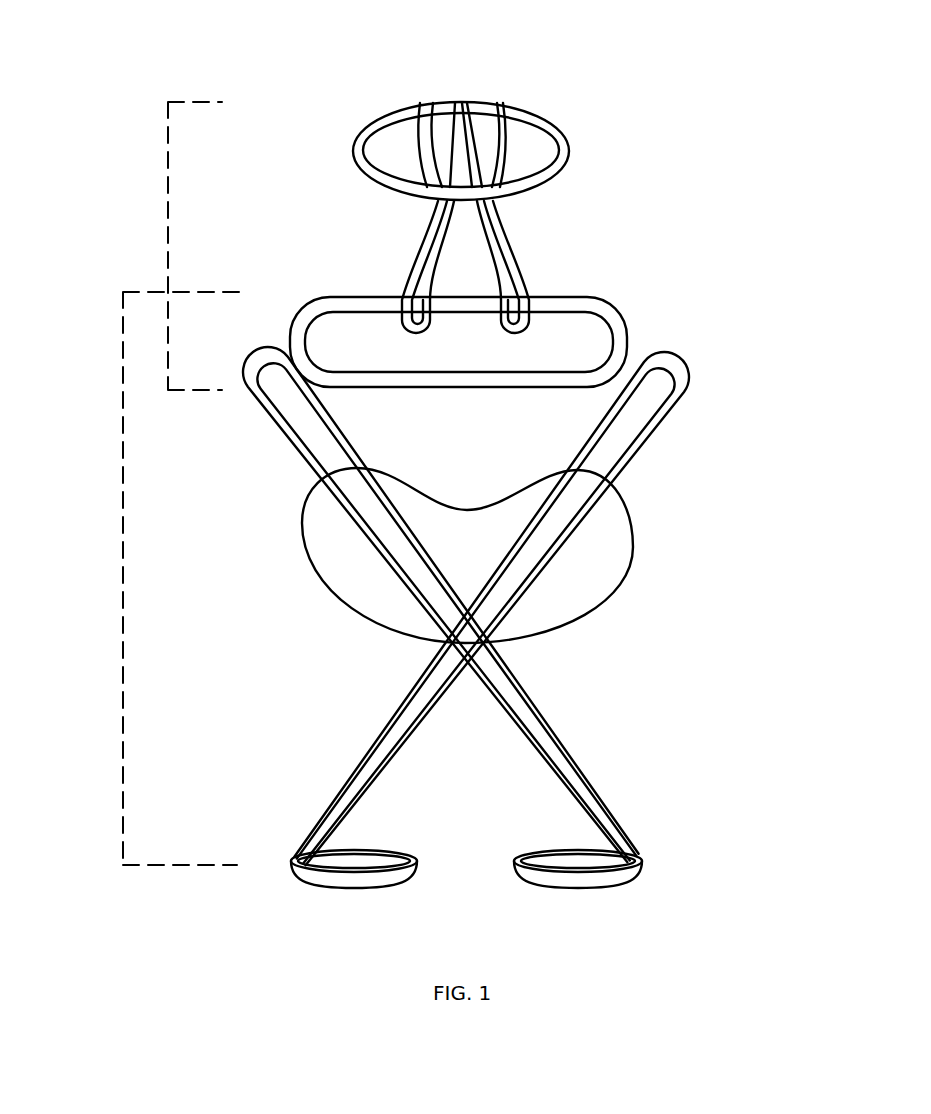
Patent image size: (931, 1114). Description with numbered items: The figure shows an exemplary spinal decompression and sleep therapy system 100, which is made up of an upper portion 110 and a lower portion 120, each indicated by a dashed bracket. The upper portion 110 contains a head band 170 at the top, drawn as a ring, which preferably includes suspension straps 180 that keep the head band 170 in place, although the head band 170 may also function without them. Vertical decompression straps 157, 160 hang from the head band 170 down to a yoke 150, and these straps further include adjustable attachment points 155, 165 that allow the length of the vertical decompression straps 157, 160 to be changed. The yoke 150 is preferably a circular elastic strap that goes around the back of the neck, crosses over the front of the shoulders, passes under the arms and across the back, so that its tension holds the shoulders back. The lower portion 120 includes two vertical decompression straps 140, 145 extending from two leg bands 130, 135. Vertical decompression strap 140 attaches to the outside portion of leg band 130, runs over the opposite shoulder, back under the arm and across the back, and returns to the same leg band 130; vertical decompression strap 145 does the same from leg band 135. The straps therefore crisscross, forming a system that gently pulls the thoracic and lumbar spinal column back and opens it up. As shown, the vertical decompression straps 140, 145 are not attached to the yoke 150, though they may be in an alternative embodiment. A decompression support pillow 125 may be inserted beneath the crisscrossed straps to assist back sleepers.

The spinal decompression and sleep therapy system 100 is at (697, 202).
The upper portion 110 is at (163, 238).
The lower portion 120 is at (122, 558).
The decompression support pillow 125 is at (634, 530).
The leg band 130 is at (310, 882).
The leg band 135 is at (640, 873).
The vertical decompression strap 140 is at (395, 720).
The vertical decompression strap 145 is at (550, 728).
The yoke 150 is at (623, 352).
The adjustable attachment point 155 is at (442, 203).
The vertical decompression strap 157 is at (446, 118).
The vertical decompression strap 160 is at (486, 114).
The adjustable attachment point 165 is at (486, 203).
The head band 170 is at (577, 140).
The suspension straps 180 is at (510, 120).